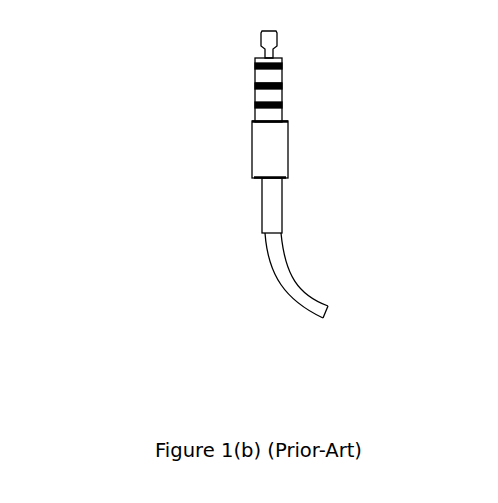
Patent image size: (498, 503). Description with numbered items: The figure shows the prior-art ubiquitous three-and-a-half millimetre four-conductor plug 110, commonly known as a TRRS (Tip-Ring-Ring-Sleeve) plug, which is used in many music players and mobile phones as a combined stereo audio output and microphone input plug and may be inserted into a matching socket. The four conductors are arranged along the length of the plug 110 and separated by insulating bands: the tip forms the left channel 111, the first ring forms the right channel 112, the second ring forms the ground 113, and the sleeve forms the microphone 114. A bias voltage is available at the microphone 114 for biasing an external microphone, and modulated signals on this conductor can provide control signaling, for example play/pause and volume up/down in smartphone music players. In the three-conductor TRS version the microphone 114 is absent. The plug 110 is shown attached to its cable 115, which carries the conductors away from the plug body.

The plug 110 is at (222, 188).
The left channel 111 is at (268, 47).
The right channel 112 is at (277, 77).
The ground 113 is at (265, 93).
The microphone 114 is at (273, 110).
The cable 115 is at (265, 255).